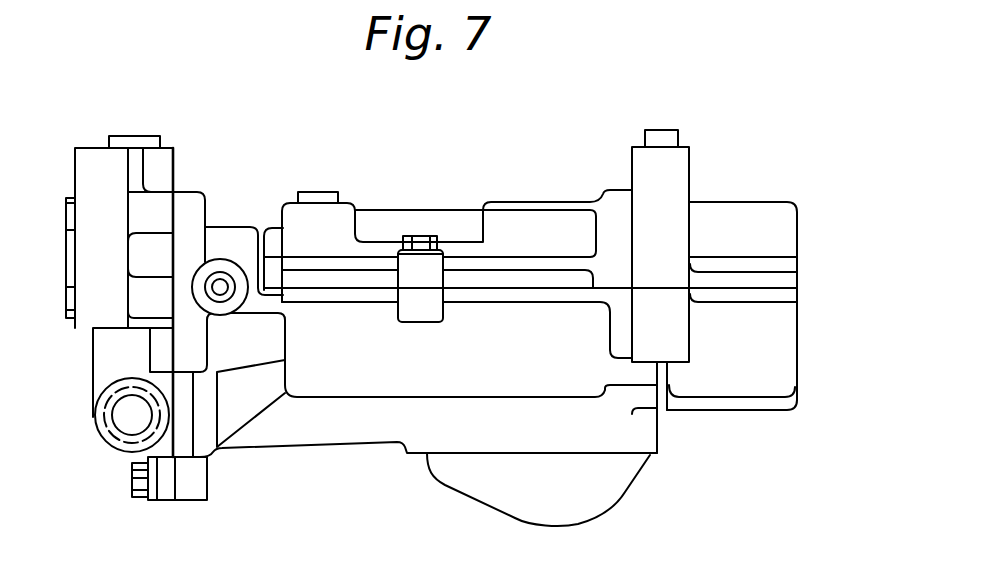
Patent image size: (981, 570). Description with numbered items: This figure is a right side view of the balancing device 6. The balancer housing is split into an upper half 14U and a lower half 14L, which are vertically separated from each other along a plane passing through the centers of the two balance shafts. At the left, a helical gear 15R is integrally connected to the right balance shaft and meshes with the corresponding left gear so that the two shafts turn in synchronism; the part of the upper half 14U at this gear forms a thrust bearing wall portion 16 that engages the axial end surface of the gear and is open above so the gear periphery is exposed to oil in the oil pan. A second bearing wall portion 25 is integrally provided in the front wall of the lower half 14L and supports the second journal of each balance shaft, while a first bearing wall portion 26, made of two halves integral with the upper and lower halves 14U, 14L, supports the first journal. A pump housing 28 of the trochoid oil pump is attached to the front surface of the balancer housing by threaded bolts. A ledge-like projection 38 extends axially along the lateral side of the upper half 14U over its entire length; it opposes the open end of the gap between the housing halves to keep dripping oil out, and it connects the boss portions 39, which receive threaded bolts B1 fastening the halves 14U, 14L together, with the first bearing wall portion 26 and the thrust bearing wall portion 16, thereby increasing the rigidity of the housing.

The balancing device 6 is at (537, 146).
The upper half of balancer housing 14U is at (745, 208).
The lower half of balancer housing 14L is at (727, 400).
The helical gear 15R is at (317, 197).
The thrust bearing wall portion 16 is at (293, 218).
The second bearing wall portion 25 is at (228, 235).
The first bearing wall portion 26 is at (612, 215).
The pump housing 28 is at (93, 370).
The ledge-like projection 38 is at (353, 265).
The boss portion 39 is at (425, 312).
The threaded bolt B1 is at (421, 243).